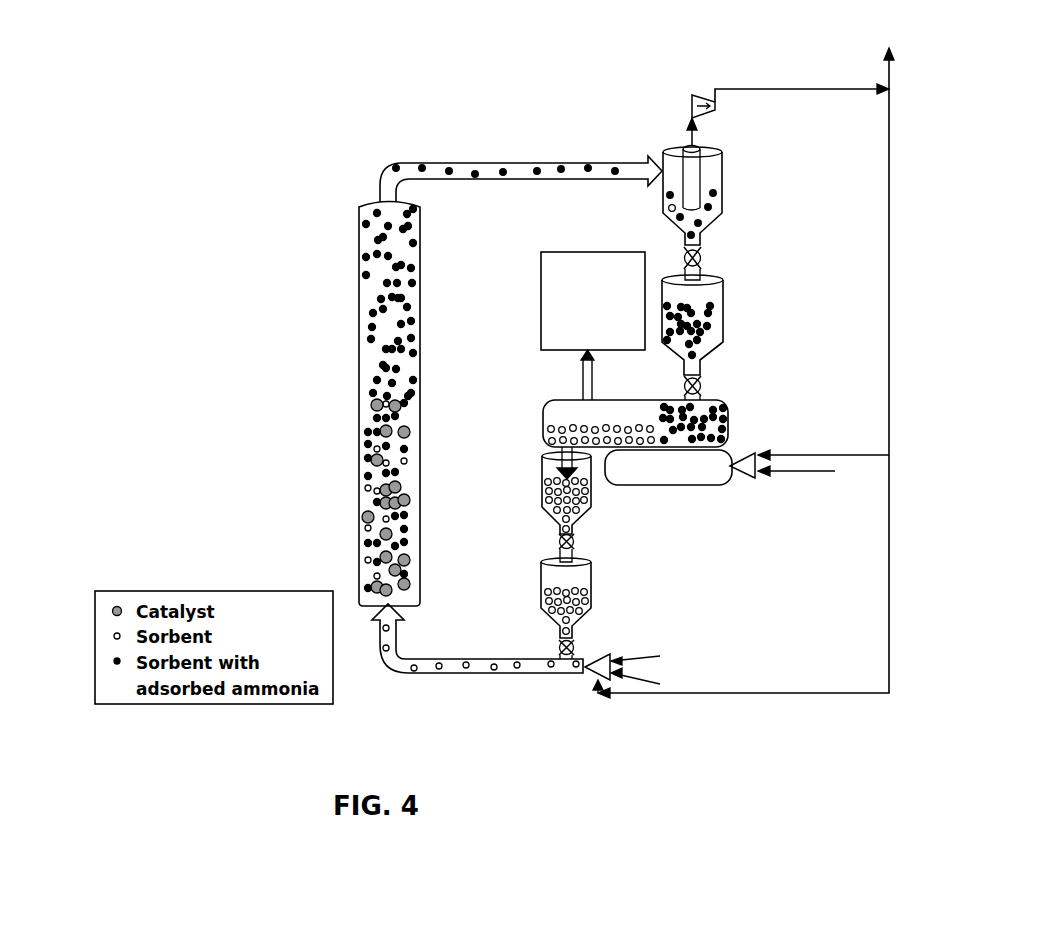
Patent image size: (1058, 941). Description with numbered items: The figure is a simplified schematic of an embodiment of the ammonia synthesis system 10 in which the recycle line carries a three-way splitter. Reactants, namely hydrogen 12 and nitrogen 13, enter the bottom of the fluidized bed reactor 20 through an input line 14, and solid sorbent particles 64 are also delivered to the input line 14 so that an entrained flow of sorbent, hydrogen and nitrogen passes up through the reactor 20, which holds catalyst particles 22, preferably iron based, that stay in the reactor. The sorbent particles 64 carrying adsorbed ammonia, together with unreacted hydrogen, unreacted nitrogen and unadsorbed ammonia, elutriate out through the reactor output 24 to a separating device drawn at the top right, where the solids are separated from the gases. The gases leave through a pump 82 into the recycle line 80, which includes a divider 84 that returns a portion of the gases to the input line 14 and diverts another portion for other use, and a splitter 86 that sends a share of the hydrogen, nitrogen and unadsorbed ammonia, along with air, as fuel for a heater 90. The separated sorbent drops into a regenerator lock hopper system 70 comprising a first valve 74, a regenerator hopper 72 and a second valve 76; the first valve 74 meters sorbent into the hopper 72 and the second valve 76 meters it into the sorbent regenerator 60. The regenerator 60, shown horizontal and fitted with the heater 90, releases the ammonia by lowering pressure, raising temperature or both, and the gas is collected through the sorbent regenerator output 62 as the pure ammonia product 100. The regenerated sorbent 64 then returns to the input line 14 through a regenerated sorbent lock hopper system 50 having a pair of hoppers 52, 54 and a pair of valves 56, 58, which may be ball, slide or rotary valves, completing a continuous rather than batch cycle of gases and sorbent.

The system 10 is at (768, 66).
The hydrogen 12 is at (712, 676).
The nitrogen 13 is at (680, 698).
The input line 14 is at (532, 674).
The fluidized bed reactor 20 is at (235, 412).
The catalyst particles 22 is at (110, 611).
The reactor output 24 is at (565, 170).
The regenerated sorbent lock hopper system 50 is at (598, 553).
The hopper 52 is at (592, 496).
The hopper 54 is at (592, 601).
The valve 56 is at (558, 541).
The valve 58 is at (559, 649).
The sorbent regenerator 60 is at (732, 432).
The sorbent regenerator output 62 is at (592, 382).
The solid sorbent particles 64 is at (366, 275).
The regenerator lock hopper system 70 is at (737, 247).
The regenerator hopper 72 is at (718, 345).
The first valve 74 is at (703, 260).
The second valve 76 is at (703, 386).
The recycle line 80 is at (890, 255).
The pump 82 is at (716, 105).
The divider 84 is at (892, 89).
The splitter 86 is at (890, 456).
The heater 90 is at (724, 489).
The pure ammonia product 100 is at (592, 256).